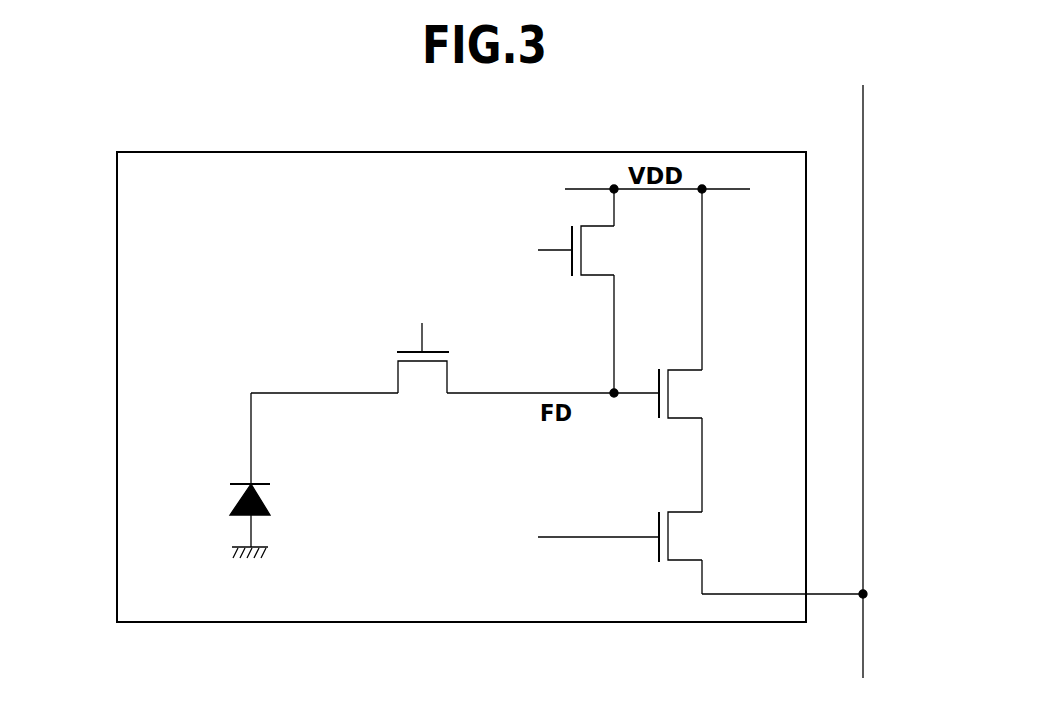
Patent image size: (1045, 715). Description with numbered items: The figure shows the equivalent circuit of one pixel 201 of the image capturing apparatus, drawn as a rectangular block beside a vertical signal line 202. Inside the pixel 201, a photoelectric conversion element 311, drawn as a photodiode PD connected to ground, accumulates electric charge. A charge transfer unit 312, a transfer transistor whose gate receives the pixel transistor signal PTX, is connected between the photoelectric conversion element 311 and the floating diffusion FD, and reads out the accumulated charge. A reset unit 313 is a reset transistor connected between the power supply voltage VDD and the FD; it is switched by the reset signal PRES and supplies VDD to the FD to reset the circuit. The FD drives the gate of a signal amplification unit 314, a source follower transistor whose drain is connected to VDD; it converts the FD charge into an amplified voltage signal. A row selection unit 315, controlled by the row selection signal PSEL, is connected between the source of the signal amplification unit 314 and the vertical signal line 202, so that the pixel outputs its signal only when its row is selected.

The pixel 201 is at (115, 190).
The vertical signal line 202 is at (865, 258).
The photoelectric conversion element 311 is at (242, 483).
The charge transfer unit 312 is at (422, 394).
The reset unit 313 is at (600, 253).
The signal amplification unit 314 is at (697, 393).
The row selection unit 315 is at (697, 537).